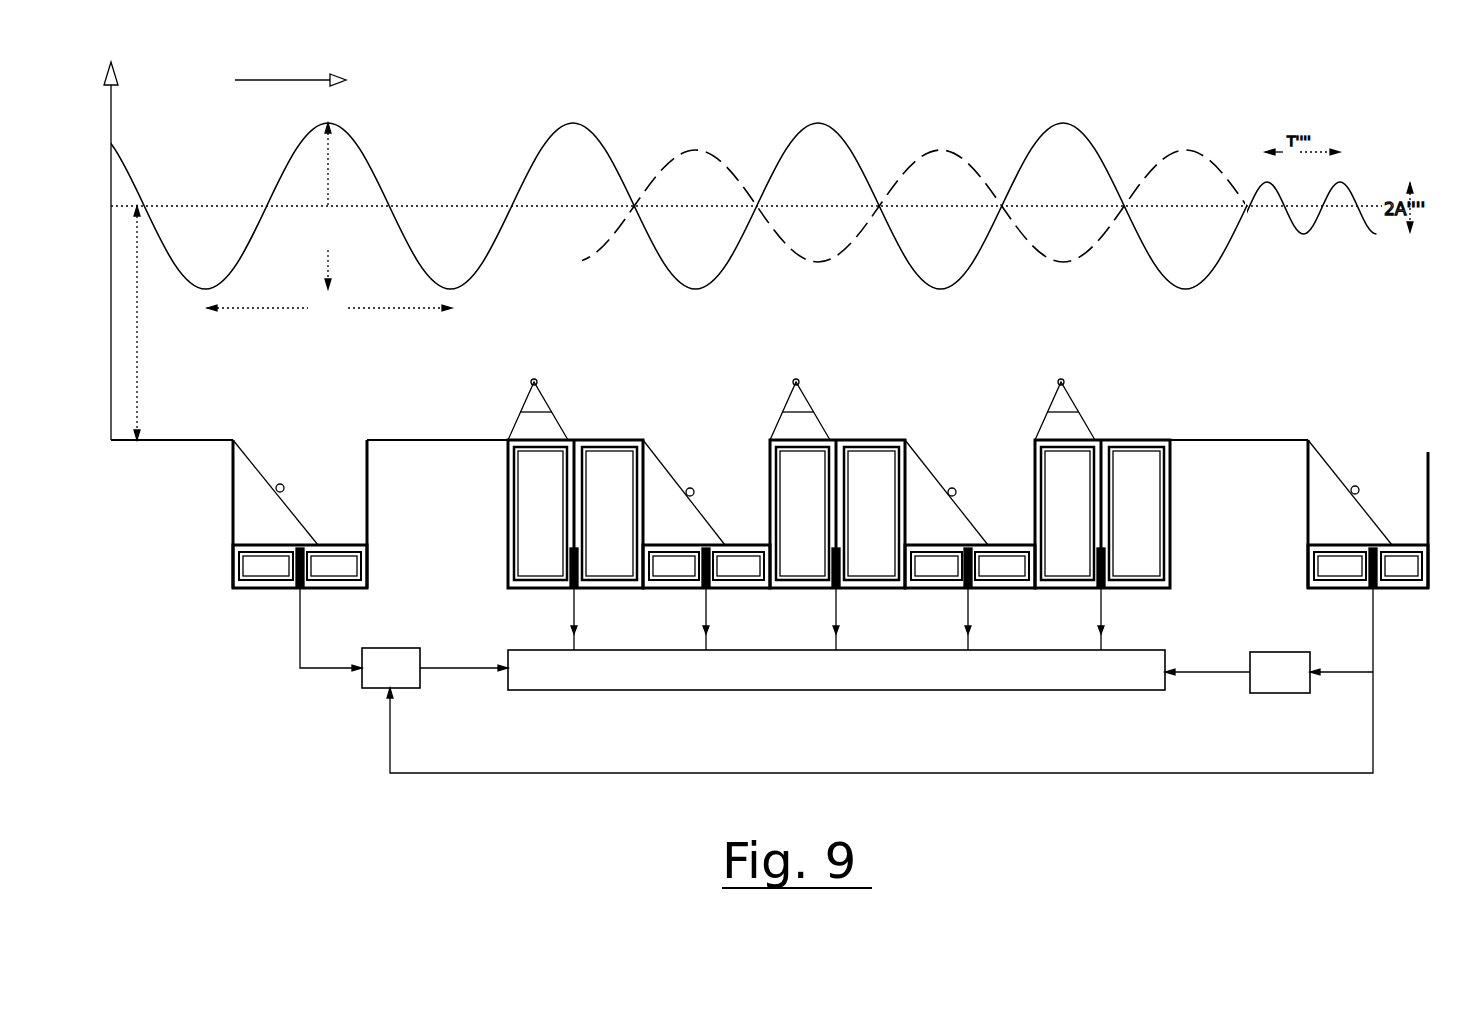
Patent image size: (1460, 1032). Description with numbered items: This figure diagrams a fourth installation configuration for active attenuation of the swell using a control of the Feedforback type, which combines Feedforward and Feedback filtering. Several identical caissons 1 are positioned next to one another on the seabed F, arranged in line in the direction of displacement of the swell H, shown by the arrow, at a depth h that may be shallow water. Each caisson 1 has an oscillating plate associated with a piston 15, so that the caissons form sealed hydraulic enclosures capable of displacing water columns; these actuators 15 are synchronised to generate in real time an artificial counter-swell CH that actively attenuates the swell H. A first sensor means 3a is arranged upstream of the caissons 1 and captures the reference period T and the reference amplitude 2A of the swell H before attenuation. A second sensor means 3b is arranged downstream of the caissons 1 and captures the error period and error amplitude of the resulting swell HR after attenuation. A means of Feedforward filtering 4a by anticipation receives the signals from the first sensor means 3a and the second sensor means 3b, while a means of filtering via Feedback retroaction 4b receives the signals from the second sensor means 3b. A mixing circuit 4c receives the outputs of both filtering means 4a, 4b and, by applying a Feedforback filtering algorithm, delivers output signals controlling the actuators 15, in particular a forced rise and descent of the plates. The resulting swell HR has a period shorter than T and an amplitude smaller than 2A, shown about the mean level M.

The caisson 1 is at (582, 425).
The piston 15 is at (571, 592).
The first sensor means 3a is at (374, 600).
The second sensor means 3b is at (1302, 603).
The means of Feedforward filtering 4a is at (408, 689).
The means of filtering via Feedback retroaction 4b is at (1280, 690).
The mixing circuit 4c is at (742, 690).
The seabed F is at (412, 437).
The swell H is at (372, 146).
The counter-swell CH is at (700, 148).
The resulting swell HR is at (1352, 198).
The mean water level M is at (206, 203).
The depth h is at (135, 323).
The reference amplitude 2A is at (325, 206).
The reference period T is at (329, 310).